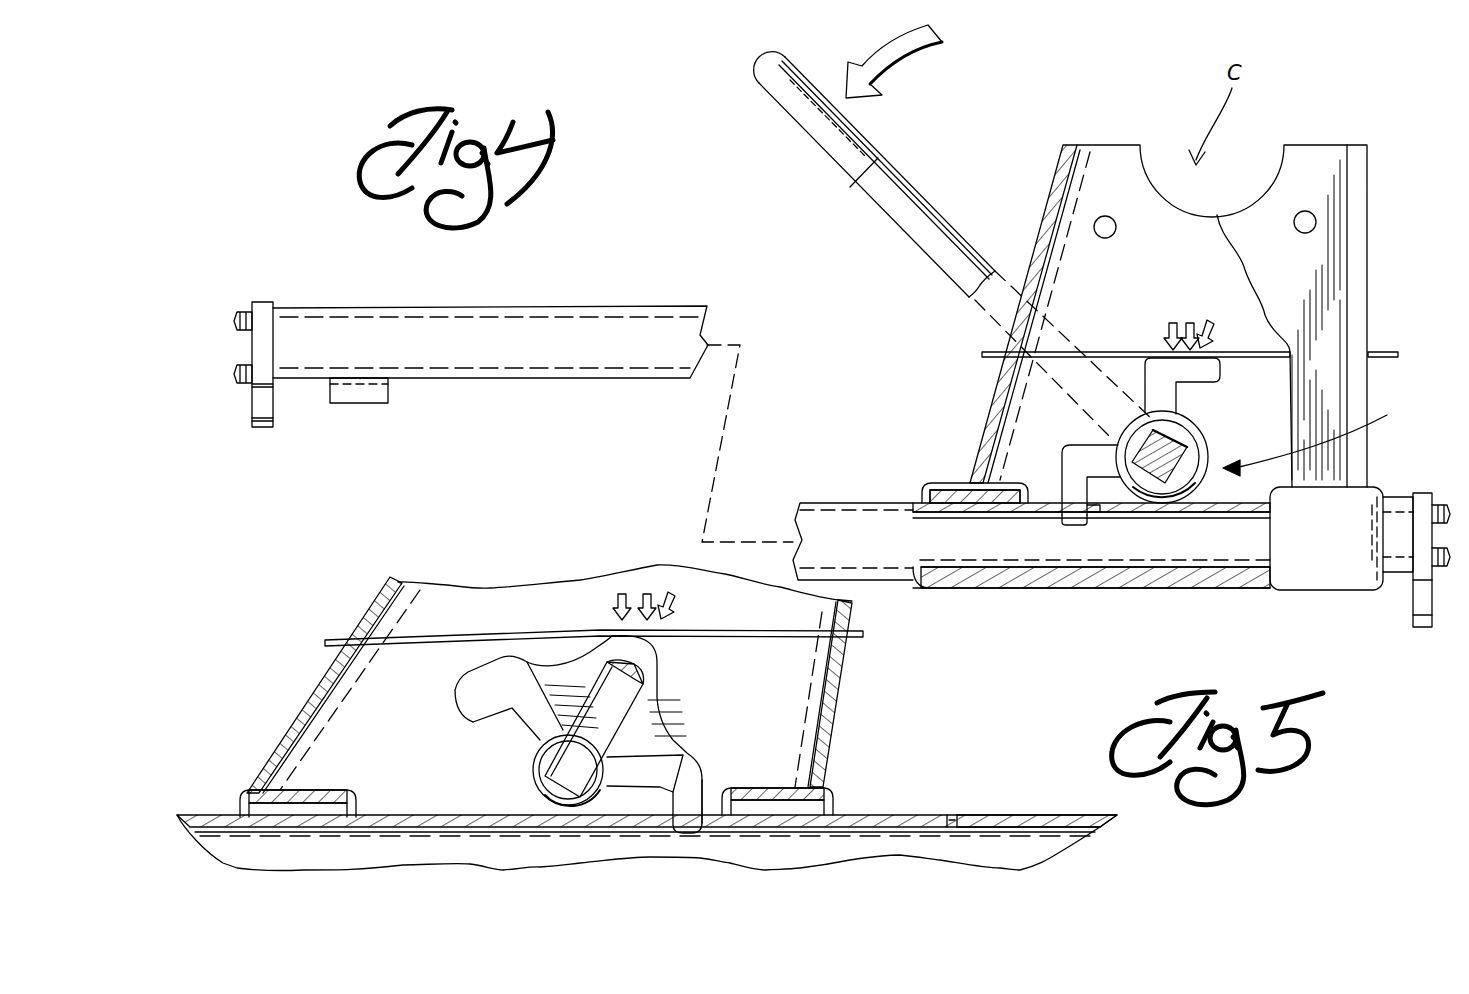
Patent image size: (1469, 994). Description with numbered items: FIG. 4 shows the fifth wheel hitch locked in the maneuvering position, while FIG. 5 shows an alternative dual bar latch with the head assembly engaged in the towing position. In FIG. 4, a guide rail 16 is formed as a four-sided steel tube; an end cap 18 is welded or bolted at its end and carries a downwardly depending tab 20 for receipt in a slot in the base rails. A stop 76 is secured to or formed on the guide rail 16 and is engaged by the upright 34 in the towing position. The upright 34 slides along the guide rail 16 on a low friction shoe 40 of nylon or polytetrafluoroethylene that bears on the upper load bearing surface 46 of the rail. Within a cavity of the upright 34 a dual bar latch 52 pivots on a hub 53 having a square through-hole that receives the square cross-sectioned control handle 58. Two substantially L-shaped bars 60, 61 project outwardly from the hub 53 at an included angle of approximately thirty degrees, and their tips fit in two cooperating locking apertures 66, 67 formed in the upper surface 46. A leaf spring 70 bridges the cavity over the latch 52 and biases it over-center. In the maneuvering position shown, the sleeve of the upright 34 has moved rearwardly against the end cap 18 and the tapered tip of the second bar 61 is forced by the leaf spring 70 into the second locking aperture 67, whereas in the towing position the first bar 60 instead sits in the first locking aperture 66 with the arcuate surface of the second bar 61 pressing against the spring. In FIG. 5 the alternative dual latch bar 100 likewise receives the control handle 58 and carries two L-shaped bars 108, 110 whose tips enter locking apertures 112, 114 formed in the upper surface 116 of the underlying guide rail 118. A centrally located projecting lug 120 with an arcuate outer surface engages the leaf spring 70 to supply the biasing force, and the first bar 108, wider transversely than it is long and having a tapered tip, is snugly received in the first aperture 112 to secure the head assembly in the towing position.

In FIG. 4, the guide rail 16 is at (478, 308).
In FIG. 4, the end cap 18 is at (260, 302).
In FIG. 4, the tab 20 is at (253, 424).
In FIG. 4, the stop 76 is at (360, 394).
In FIG. 4, the control handle 58 is at (918, 190).
In FIG. 5, the control handle 58 is at (648, 700).
In FIG. 4, the upright 34 is at (1368, 170).
In FIG. 5, the upright 34 is at (840, 704).
In FIG. 4, the leaf spring 70 is at (1112, 350).
In FIG. 5, the leaf spring 70 is at (764, 630).
In FIG. 4, the first bar 60 is at (1183, 396).
In FIG. 4, the hub 53 is at (1205, 440).
In FIG. 4, the dual bar latch 52 is at (1387, 415).
In FIG. 4, the first locking aperture 66 is at (826, 502).
In FIG. 4, the upper load bearing surface 46 is at (876, 503).
In FIG. 4, the low friction shoe 40 is at (958, 488).
In FIG. 5, the low friction shoe 40 is at (335, 792).
In FIG. 4, the second bar 61 is at (1064, 480).
In FIG. 4, the second locking aperture 67 is at (1100, 515).
In FIG. 5, the projecting lug 120 is at (610, 638).
In FIG. 5, the dual latch bar 100 is at (654, 664).
In FIG. 5, the second bar 110 is at (474, 725).
In FIG. 5, the first locking aperture 112 is at (708, 805).
In FIG. 5, the first bar 108 is at (680, 803).
In FIG. 5, the second locking aperture 114 is at (968, 814).
In FIG. 5, the upper surface 116 is at (1040, 814).
In FIG. 5, the guide rail 118 is at (1032, 846).